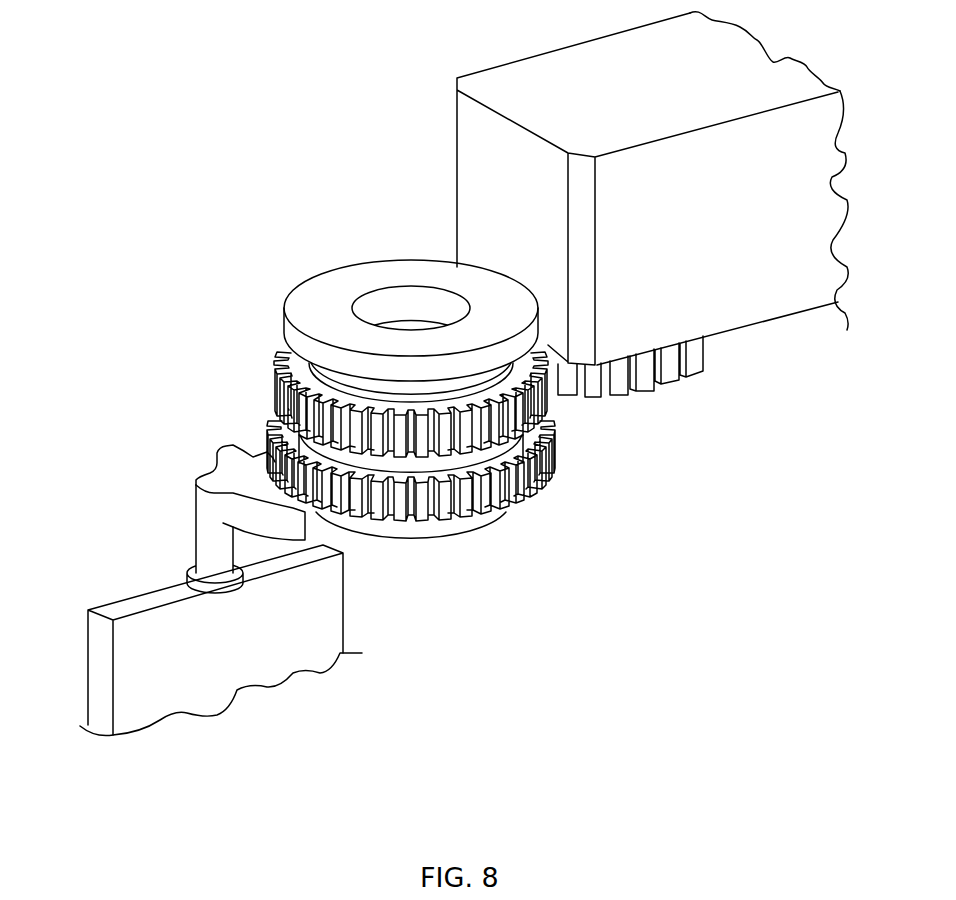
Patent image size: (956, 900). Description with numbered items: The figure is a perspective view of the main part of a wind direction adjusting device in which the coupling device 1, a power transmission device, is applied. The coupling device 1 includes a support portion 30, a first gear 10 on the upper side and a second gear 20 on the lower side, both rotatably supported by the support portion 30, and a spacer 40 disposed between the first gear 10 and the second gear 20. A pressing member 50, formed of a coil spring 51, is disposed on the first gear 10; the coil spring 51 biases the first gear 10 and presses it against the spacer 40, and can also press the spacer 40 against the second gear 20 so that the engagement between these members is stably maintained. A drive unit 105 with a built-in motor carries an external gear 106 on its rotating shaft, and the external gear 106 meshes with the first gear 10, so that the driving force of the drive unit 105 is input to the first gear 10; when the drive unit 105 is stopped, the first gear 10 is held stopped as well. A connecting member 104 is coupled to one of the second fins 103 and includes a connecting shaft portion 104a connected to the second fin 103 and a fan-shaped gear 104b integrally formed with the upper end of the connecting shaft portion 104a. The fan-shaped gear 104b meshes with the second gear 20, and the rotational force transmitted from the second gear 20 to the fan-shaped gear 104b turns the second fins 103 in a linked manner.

The coupling device 1 is at (392, 353).
The first gear 10 is at (277, 389).
The second gear 20 is at (555, 455).
The support portion 30 is at (410, 255).
The spacer 40 is at (460, 461).
The pressing member 50 is at (332, 356).
The coil spring 51 is at (323, 378).
The second fin 103 is at (125, 604).
The connecting member 104 is at (161, 510).
The connecting shaft portion 104a is at (207, 547).
The fan-shaped gear 104b is at (235, 470).
The drive unit 105 is at (532, 66).
The external gear 106 is at (652, 382).